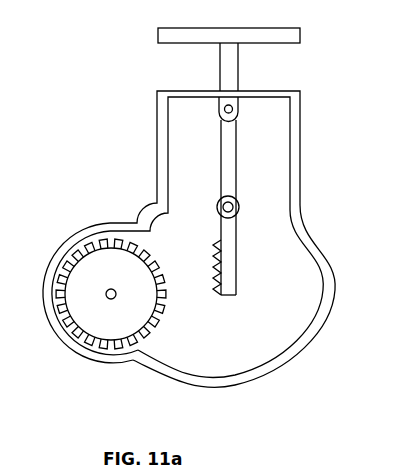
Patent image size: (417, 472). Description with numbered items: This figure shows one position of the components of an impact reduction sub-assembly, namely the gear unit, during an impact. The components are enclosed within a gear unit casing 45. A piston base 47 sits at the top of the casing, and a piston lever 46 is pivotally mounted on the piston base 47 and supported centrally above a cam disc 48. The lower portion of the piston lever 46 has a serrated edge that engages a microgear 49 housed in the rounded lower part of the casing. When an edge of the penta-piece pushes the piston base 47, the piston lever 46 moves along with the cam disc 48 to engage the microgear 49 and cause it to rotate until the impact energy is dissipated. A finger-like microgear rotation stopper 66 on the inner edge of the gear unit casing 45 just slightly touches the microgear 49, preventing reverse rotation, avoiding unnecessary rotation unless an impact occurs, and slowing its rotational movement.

The gear unit casing 45 is at (153, 158).
The piston lever 46 is at (236, 252).
The piston base 47 is at (243, 65).
The cam disc 48 is at (238, 202).
The microgear 49 is at (85, 340).
The microgear rotation stopper 66 is at (52, 277).